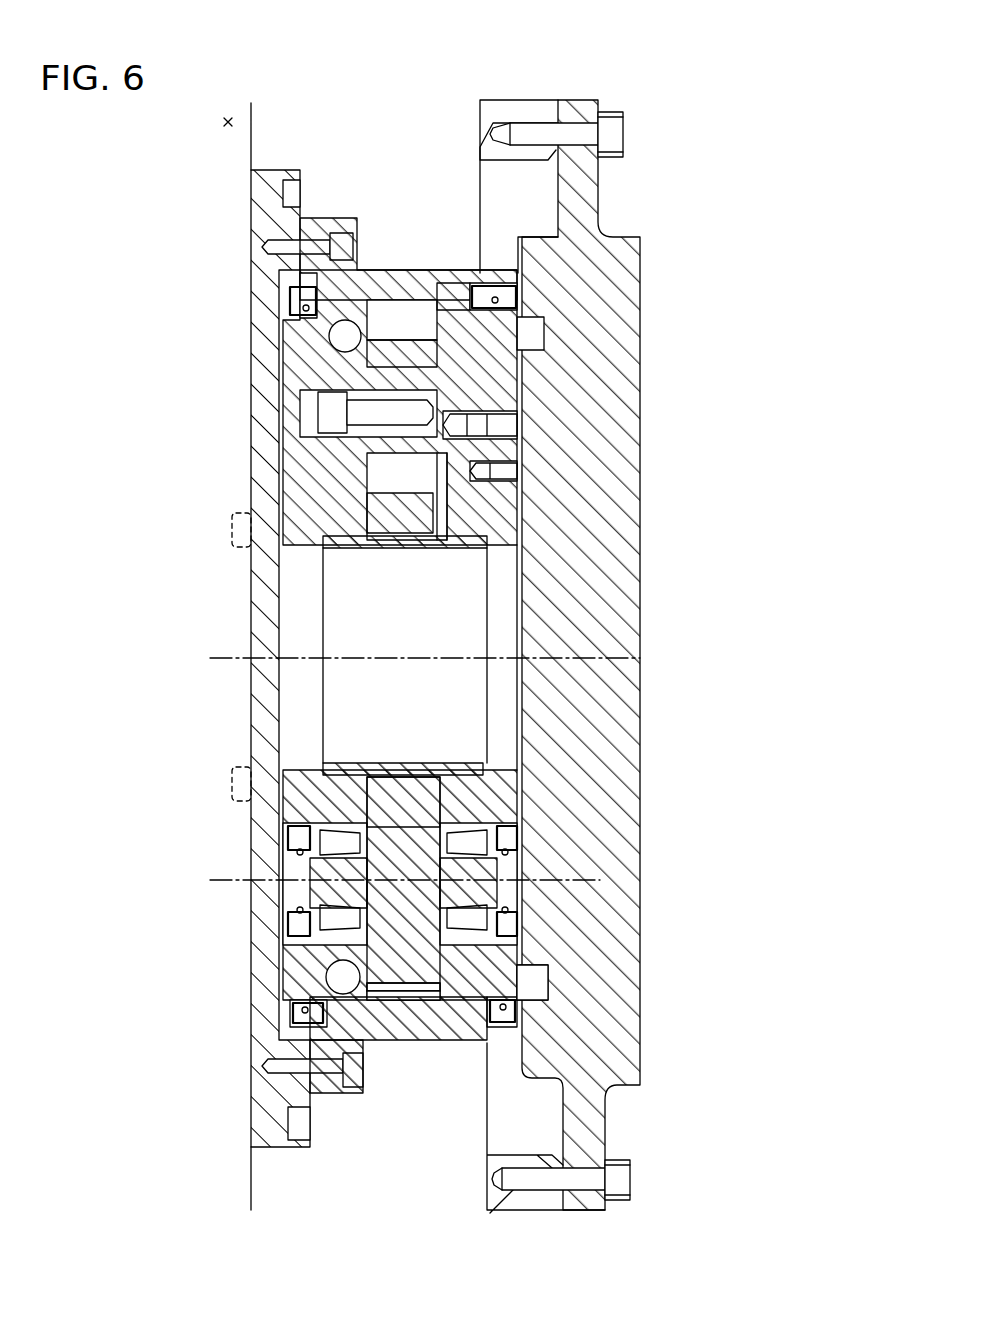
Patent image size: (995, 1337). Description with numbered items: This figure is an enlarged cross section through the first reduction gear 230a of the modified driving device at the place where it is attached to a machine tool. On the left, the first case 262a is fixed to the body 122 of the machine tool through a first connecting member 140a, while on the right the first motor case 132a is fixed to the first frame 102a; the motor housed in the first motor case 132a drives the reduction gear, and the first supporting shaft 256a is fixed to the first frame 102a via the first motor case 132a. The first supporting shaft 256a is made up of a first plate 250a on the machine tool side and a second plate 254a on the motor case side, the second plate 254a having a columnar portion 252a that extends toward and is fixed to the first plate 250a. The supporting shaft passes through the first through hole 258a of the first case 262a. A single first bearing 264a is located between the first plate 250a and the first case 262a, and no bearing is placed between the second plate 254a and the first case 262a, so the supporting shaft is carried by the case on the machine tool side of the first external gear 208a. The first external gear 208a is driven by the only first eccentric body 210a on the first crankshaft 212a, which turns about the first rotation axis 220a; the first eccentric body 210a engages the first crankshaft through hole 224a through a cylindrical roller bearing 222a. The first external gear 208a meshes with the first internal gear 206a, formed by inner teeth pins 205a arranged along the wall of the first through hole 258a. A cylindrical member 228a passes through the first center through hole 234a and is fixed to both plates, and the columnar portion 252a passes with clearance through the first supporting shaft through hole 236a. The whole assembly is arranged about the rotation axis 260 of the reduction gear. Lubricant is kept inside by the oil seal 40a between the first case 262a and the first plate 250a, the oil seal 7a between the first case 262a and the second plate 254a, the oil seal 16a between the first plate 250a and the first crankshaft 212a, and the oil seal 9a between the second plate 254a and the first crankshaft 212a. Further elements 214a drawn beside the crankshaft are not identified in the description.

The body 122 is at (226, 117).
The first connecting member 140a is at (272, 172).
The oil seal 40a is at (312, 270).
The first bearing 264a is at (348, 320).
The first supporting shaft 256a is at (527, 57).
The first plate 250a is at (358, 322).
The columnar portion 252a is at (387, 387).
The second plate 254a is at (445, 293).
The first frame 102a is at (537, 120).
The first through hole 258a is at (450, 285).
The first motor case 132a is at (602, 258).
The first case 262a is at (483, 284).
The first supporting shaft through hole 236a is at (393, 488).
The first center through hole 234a is at (387, 548).
The cylindrical member 228a is at (457, 548).
The rotation axis 260 is at (228, 660).
The first crankshaft through hole 224a is at (470, 768).
The cylindrical roller bearing 222a is at (383, 800).
The oil seal 16a is at (290, 840).
The first rotation axis 220a is at (225, 880).
The first eccentric body 210a is at (400, 862).
The first crankshaft 212a is at (340, 850).
The tapered roller bearing 214a is at (330, 915).
The first internal gear 206a is at (388, 1000).
The inner teeth pins 205a is at (410, 1000).
The first external gear 208a is at (385, 1000).
The first reduction gear 230a is at (341, 1110).
The oil seal 9a is at (518, 940).
The oil seal 7a is at (500, 1037).